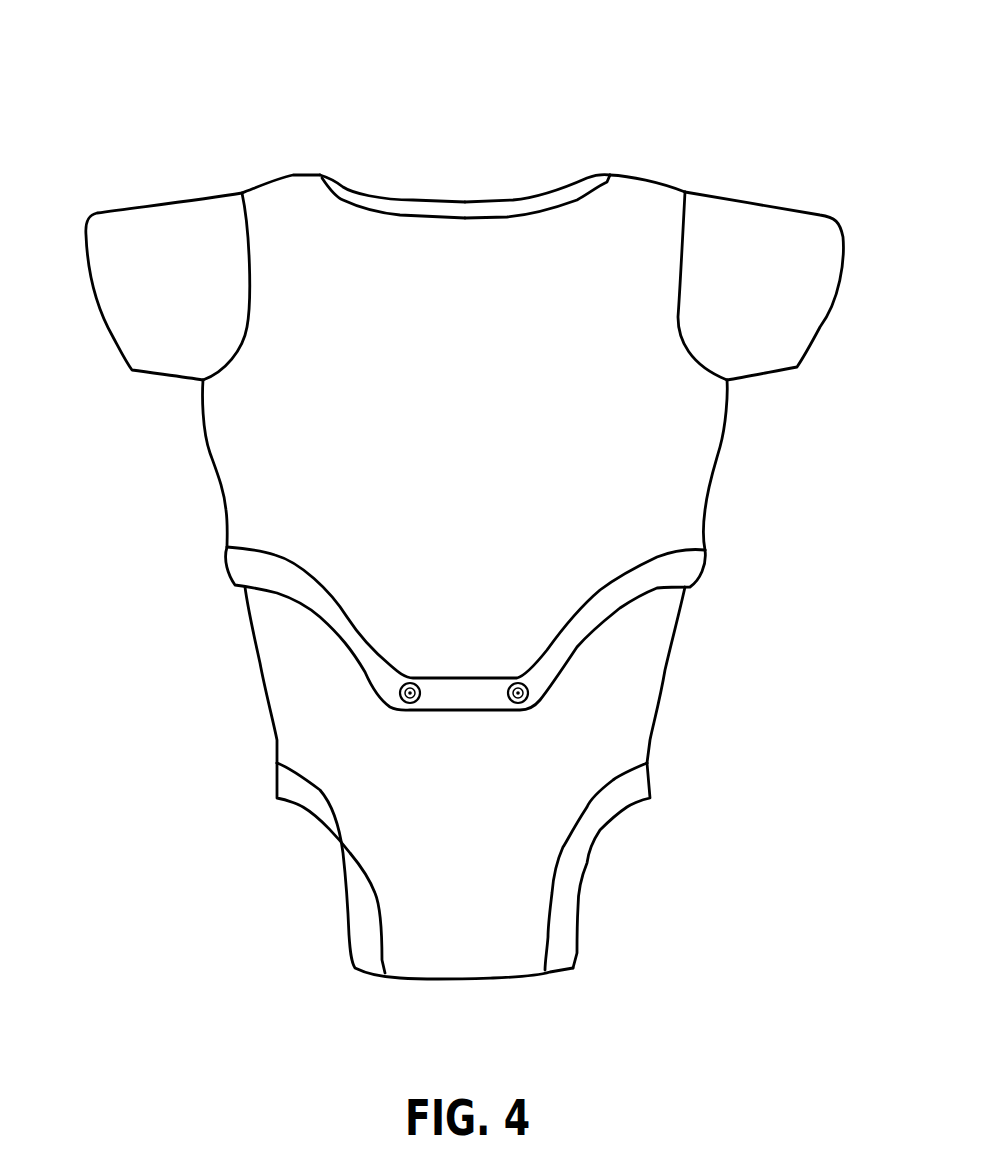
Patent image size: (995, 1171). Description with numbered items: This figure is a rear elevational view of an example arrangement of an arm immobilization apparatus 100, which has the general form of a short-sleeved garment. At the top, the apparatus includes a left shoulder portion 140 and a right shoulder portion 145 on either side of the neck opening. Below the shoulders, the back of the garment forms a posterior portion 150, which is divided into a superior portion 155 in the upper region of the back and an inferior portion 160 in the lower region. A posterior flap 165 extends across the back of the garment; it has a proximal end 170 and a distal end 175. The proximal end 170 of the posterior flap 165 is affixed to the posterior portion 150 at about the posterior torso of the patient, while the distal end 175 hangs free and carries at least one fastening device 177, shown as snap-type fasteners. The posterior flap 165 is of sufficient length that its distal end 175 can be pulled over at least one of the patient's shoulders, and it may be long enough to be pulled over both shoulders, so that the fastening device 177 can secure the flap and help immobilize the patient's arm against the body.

The arm immobilization apparatus 100 is at (158, 117).
The left shoulder portion 140 is at (297, 174).
The right shoulder portion 145 is at (620, 177).
The posterior portion 150 is at (166, 510).
The superior portion 155 is at (387, 313).
The inferior portion 160 is at (413, 867).
The posterior flap 165 is at (440, 615).
The proximal end 170 is at (518, 565).
The distal end 175 is at (465, 692).
The fastening device 177 is at (530, 693).